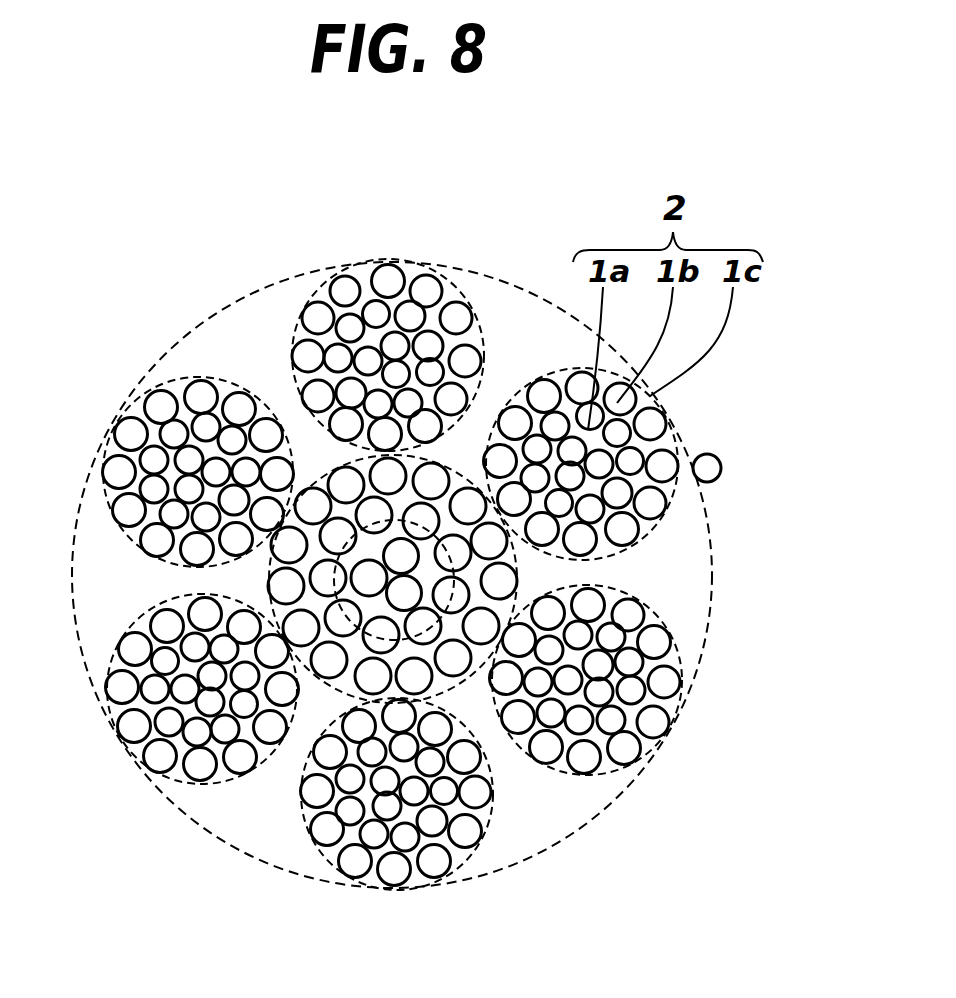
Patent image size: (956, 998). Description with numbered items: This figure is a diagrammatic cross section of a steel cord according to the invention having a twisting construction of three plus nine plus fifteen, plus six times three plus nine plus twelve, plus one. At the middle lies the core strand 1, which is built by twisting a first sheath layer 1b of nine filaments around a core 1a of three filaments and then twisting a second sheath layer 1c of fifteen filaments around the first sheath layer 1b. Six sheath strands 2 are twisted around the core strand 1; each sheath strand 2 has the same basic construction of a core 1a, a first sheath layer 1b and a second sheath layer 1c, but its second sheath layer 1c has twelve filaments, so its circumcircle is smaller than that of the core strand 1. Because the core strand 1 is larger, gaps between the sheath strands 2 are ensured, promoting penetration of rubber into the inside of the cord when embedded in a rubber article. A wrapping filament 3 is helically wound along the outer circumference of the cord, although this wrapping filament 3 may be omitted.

The core strand 1 is at (457, 680).
The core 1a is at (326, 322).
The first sheath layer 1b is at (366, 310).
The second sheath layer 1c is at (418, 269).
The sheath strand 2 is at (376, 295).
The wrapping filament 3 is at (718, 479).